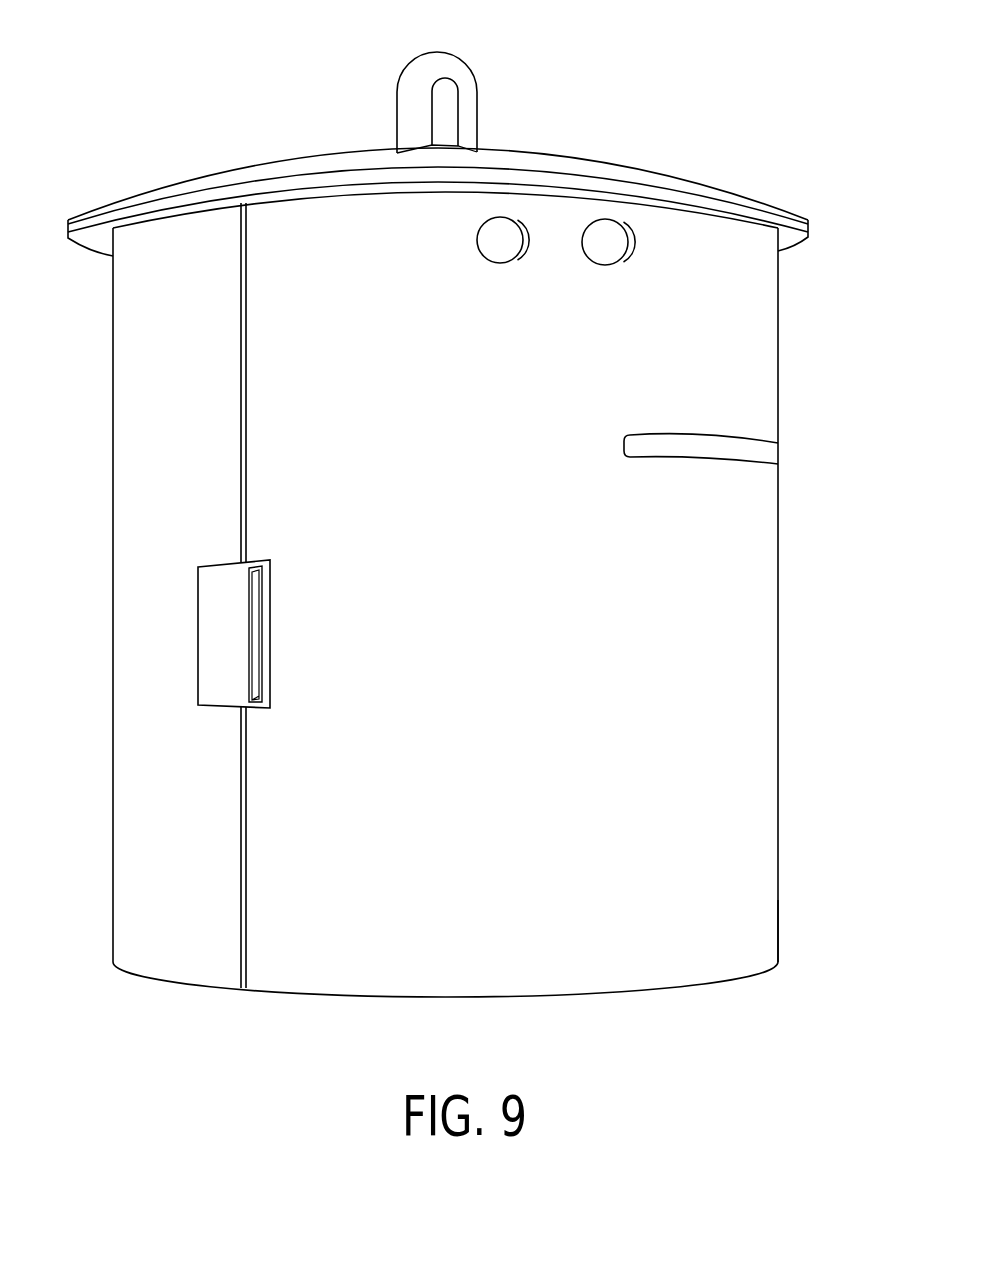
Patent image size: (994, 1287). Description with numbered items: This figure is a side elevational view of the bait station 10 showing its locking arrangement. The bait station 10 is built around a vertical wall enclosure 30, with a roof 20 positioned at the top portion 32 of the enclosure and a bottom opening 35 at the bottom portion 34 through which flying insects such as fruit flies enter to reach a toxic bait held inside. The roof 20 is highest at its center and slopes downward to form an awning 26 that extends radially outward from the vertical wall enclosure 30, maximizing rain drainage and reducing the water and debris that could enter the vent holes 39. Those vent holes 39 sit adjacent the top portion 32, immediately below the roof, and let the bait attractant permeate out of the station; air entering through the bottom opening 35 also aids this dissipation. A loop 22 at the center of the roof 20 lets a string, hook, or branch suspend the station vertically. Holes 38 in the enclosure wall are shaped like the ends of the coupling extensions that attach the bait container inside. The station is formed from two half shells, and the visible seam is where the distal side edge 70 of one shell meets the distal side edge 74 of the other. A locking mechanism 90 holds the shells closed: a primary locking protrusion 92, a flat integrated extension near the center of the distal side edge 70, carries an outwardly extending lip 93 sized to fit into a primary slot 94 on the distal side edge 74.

The bait station 10 is at (712, 82).
The roof 20 is at (282, 165).
The loop 22 is at (464, 76).
The awning 26 is at (88, 242).
The vertical wall enclosure 30 is at (777, 638).
The top portion 32 is at (777, 275).
The bottom portion 34 is at (778, 952).
The bottom opening 35 is at (390, 998).
The holes 38 is at (708, 450).
The vent holes 39 is at (498, 250).
The distal side edge 70 is at (240, 902).
The distal side edge 74 is at (247, 889).
The locking mechanism 90 is at (251, 656).
The primary locking protrusion 92 is at (210, 580).
The outwardly extending lip 93 is at (263, 608).
The primary slot 94 is at (272, 663).